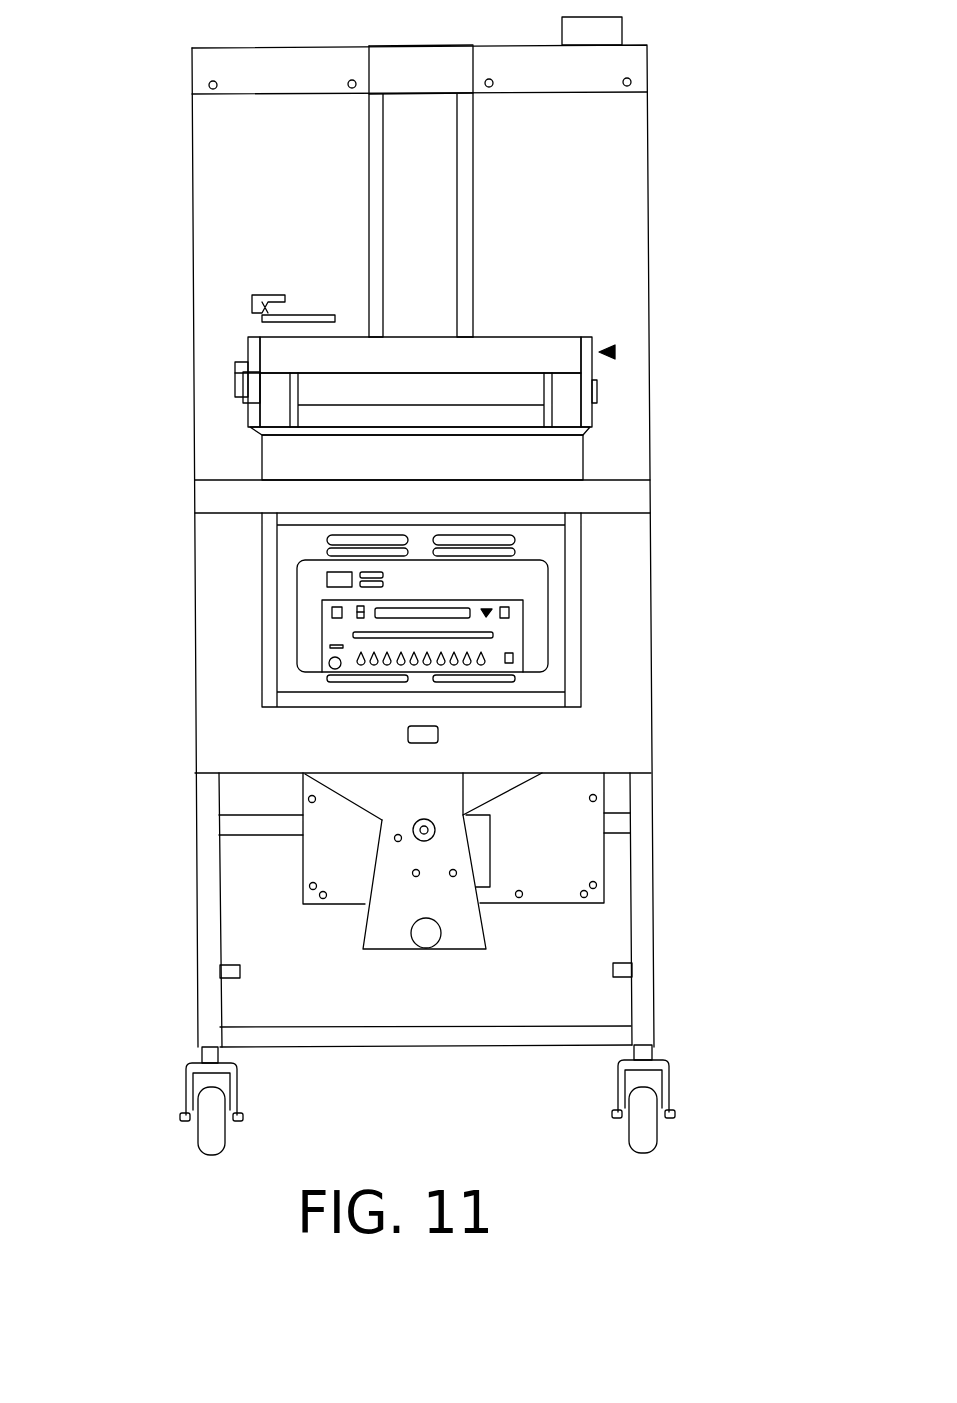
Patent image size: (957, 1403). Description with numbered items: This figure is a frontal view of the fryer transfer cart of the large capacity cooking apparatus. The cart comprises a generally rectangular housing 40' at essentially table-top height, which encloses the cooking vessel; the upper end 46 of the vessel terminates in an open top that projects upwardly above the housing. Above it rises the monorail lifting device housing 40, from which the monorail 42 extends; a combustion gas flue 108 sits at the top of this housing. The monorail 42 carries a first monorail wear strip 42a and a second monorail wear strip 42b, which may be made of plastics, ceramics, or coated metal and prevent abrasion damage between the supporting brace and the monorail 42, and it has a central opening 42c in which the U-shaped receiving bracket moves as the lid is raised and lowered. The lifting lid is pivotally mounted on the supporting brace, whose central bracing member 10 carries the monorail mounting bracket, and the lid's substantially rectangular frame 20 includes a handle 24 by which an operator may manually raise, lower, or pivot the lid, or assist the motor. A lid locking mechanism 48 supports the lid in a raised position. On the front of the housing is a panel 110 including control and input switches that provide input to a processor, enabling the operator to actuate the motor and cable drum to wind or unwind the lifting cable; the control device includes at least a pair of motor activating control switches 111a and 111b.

The central bracing member 10 is at (612, 352).
The frame 20 is at (500, 372).
The handle 24 is at (280, 397).
The monorail lifting device housing 40 is at (472, 546).
The housing 40' is at (482, 941).
The monorail 42 is at (473, 135).
The first monorail wear strip 42a is at (468, 190).
The second monorail wear strip 42b is at (372, 170).
The central opening 42c is at (413, 125).
The upper end 46 is at (262, 457).
The lid locking mechanism 48 is at (250, 296).
The combustion gas flue 108 is at (625, 28).
The panel 110 is at (523, 633).
The motor activating control switch 111a is at (509, 613).
The motor activating control switch 111b is at (327, 612).